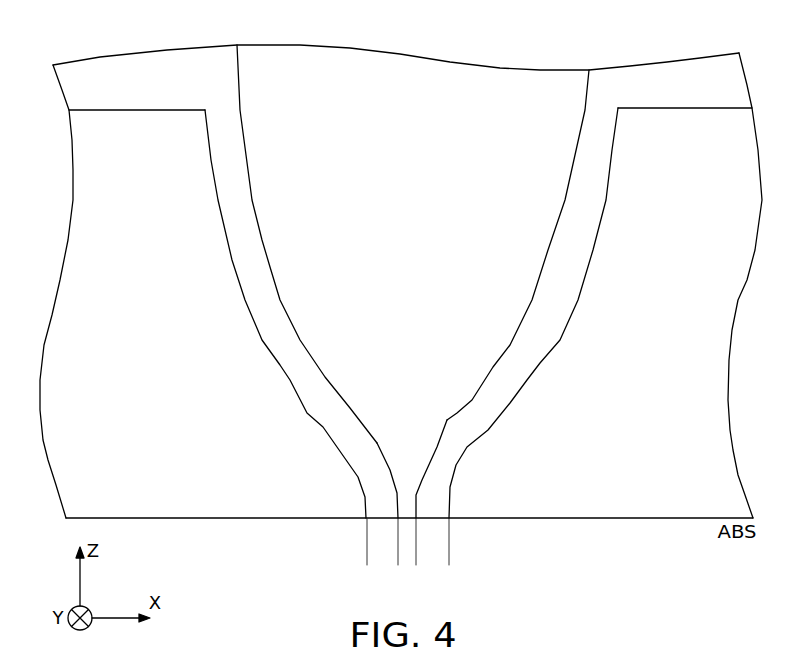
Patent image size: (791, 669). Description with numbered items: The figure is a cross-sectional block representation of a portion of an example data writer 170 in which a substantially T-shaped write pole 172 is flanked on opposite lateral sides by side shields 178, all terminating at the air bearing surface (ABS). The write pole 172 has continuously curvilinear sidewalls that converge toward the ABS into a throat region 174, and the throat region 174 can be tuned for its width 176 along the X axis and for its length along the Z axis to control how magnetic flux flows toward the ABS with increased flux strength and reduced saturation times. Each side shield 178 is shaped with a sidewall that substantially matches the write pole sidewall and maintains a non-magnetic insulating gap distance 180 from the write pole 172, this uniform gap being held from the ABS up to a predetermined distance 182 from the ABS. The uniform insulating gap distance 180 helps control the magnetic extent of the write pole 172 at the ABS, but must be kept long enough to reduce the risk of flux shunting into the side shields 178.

The data writer 170 is at (86, 31).
The write pole 172 is at (390, 92).
The throat region 174 is at (413, 439).
The width 176 is at (435, 558).
The side shield 178 is at (197, 500).
The insulating gap distance 180 is at (213, 126).
The predetermined distance 182 is at (711, 116).